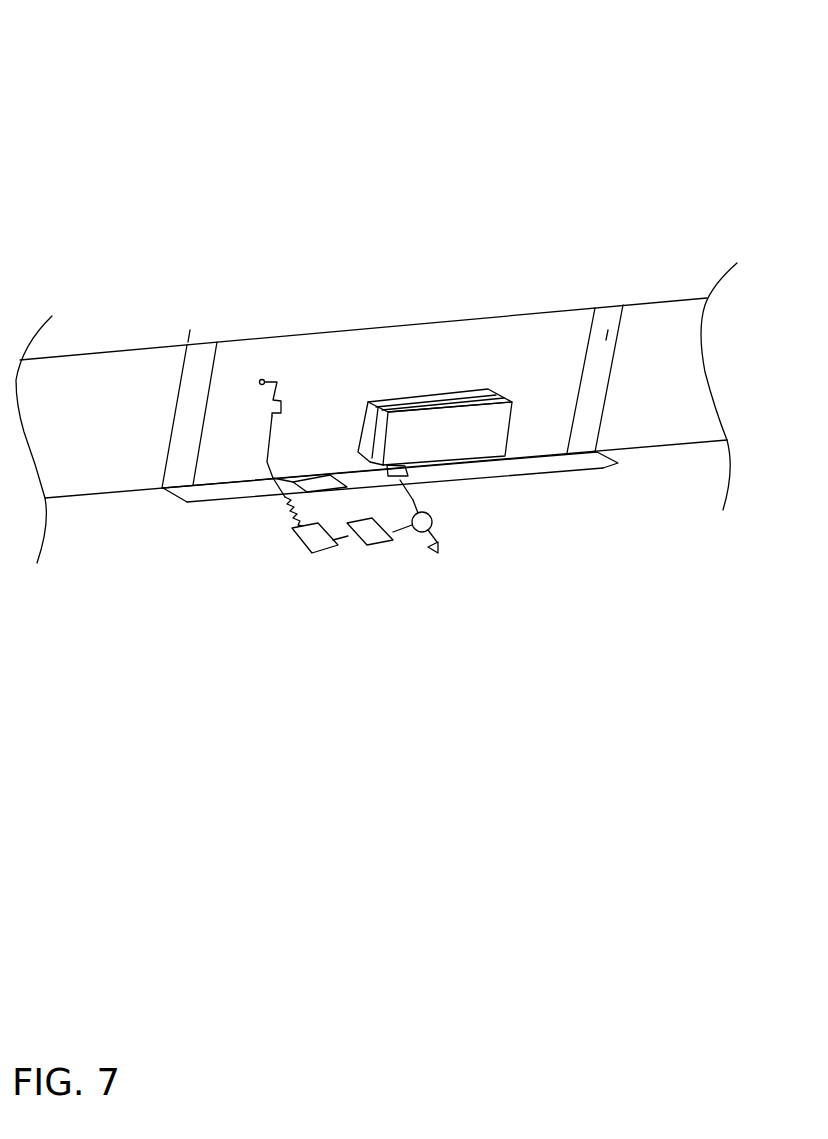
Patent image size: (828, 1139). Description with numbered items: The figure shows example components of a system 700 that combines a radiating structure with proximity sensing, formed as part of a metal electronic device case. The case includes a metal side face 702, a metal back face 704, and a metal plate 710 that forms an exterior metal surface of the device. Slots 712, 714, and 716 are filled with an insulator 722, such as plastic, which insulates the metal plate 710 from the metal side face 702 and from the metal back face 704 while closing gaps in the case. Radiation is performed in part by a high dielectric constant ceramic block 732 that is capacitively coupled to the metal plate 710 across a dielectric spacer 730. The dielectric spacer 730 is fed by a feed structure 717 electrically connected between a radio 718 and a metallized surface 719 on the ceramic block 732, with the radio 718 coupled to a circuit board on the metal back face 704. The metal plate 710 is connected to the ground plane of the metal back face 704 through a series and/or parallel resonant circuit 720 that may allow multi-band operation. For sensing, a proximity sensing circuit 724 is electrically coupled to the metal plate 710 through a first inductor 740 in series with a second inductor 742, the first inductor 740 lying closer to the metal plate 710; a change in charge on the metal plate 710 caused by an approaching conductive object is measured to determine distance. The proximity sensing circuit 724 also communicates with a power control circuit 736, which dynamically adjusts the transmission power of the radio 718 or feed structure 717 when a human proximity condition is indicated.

The system 700 is at (105, 84).
The metal side face 702 is at (140, 362).
The metal back face 704 is at (107, 517).
The metal plate 710 is at (407, 324).
The slot 712 is at (595, 308).
The slot 714 is at (202, 345).
The slot 716 is at (603, 468).
The feed structure 717 is at (380, 483).
The radio 718 is at (433, 522).
The metallized surface 719 is at (467, 443).
The resonant circuit 720 is at (335, 473).
The insulator 722 is at (177, 465).
The proximity sensing circuit 724 is at (300, 540).
The dielectric spacer 730 is at (400, 402).
The ceramic block 732 is at (467, 400).
The power control circuit 736 is at (368, 545).
The first inductor 740 is at (273, 408).
The second inductor 742 is at (290, 508).